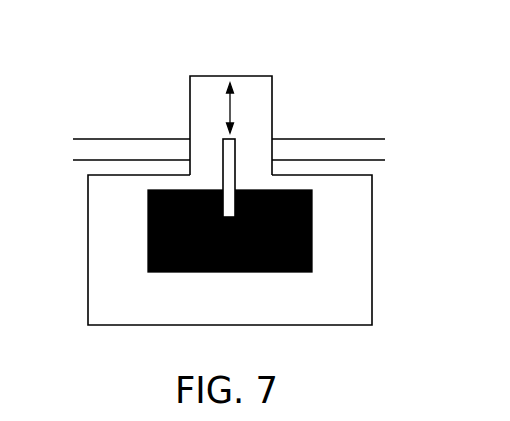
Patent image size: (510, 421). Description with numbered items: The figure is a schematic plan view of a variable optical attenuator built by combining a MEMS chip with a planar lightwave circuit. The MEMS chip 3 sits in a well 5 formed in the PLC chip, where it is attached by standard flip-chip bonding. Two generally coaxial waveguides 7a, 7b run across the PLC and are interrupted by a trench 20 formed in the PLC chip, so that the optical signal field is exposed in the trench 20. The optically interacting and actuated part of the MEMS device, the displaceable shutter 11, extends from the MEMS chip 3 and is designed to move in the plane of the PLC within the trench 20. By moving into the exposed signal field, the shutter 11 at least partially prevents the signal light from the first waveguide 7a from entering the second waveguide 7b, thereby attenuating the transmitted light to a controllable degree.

The MEMS chip 3 is at (150, 252).
The well 5 is at (372, 285).
The first waveguide 7a is at (123, 138).
The second waveguide 7b is at (350, 138).
The displaceable shutter 11 is at (312, 202).
The trench 20 is at (247, 75).